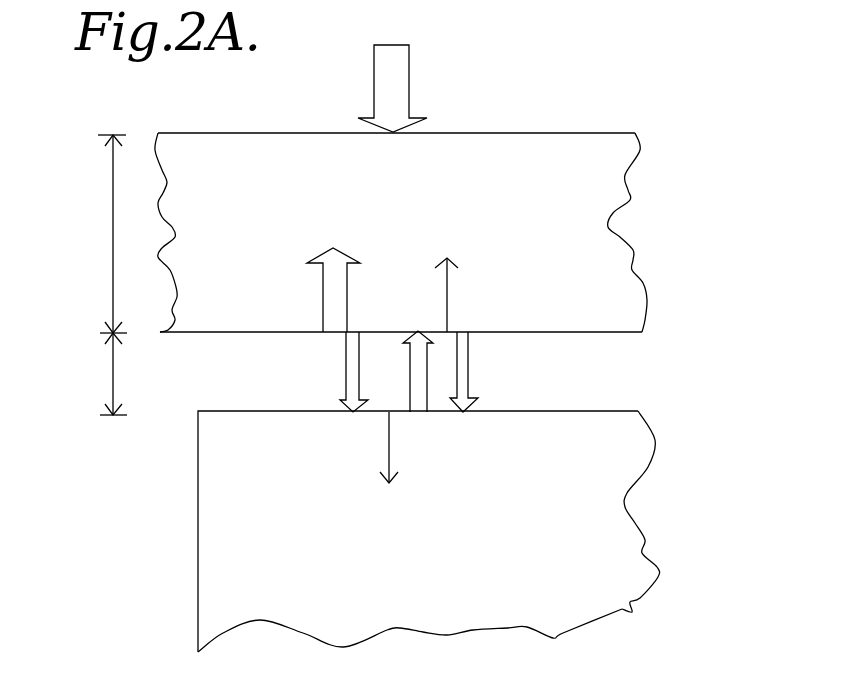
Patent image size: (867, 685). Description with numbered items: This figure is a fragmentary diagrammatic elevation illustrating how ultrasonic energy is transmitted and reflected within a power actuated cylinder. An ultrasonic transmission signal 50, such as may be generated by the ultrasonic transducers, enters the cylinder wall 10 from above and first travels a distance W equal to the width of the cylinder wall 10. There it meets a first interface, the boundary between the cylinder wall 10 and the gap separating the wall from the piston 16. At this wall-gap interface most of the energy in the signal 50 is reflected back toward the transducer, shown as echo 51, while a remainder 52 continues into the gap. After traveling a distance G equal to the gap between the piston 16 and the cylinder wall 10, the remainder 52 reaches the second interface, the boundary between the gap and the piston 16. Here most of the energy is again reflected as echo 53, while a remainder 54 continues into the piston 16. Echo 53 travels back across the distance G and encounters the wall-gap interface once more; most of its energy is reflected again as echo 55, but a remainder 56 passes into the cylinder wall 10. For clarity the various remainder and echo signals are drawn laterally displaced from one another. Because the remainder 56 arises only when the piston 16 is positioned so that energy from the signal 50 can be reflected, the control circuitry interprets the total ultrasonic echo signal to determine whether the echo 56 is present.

The cylinder wall 10 is at (588, 176).
The piston 16 is at (212, 552).
The ultrasonic transmission signal 50 is at (410, 87).
The echo 51 is at (322, 302).
The remainder 52 is at (346, 372).
The echo 53 is at (425, 385).
The remainder 54 is at (385, 448).
The echo 55 is at (468, 365).
The remainder 56 is at (447, 290).
The width of cylinder wall W is at (113, 232).
The gap distance G is at (113, 377).